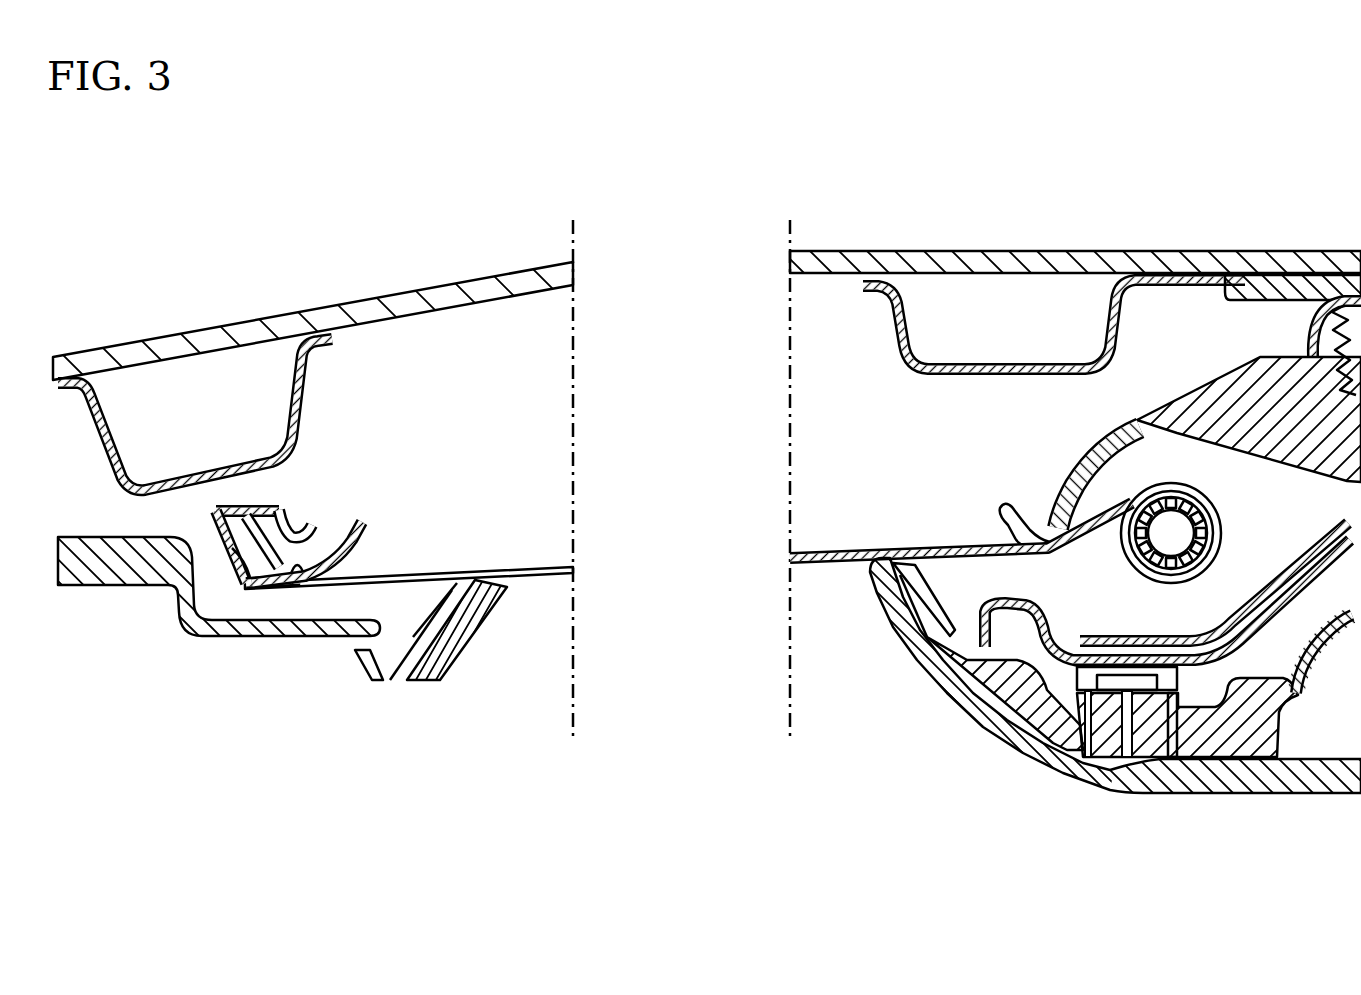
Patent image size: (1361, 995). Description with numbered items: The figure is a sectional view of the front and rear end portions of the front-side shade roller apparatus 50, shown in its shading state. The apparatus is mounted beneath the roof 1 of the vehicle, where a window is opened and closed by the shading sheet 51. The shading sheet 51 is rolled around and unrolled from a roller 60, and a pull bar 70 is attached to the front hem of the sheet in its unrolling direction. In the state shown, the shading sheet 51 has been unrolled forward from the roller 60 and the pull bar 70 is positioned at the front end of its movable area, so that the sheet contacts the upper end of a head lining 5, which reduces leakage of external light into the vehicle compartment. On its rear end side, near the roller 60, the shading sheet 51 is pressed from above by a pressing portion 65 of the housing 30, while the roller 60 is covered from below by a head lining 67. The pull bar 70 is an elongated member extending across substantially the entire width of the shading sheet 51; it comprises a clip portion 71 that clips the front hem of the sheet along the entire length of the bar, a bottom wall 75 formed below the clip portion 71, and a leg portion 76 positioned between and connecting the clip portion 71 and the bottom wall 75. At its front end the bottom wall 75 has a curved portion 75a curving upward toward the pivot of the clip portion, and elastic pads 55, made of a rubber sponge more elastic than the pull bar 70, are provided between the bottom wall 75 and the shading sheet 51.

The roof 1 is at (1024, 243).
The head lining 5 is at (472, 640).
The housing 30 is at (1126, 420).
The shade roller apparatus 50 is at (550, 555).
The shading sheet 51 is at (443, 578).
The elastic pad 55 is at (330, 570).
The roller 60 is at (1216, 502).
The pressing portion 65 is at (1017, 510).
The head lining 67 is at (1230, 796).
The pull bar 70 is at (378, 515).
The clip portion 71 is at (214, 530).
The bottom wall 75 is at (309, 570).
The curved portion 75a is at (247, 589).
The leg portion 76 is at (283, 520).